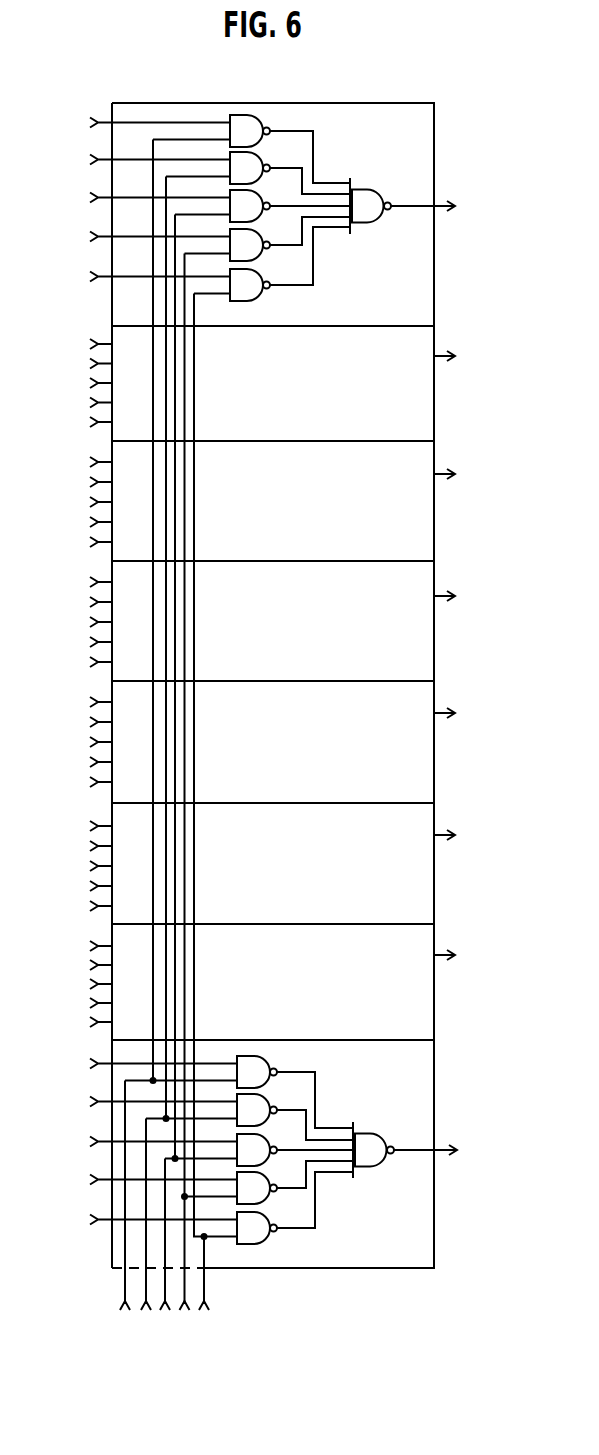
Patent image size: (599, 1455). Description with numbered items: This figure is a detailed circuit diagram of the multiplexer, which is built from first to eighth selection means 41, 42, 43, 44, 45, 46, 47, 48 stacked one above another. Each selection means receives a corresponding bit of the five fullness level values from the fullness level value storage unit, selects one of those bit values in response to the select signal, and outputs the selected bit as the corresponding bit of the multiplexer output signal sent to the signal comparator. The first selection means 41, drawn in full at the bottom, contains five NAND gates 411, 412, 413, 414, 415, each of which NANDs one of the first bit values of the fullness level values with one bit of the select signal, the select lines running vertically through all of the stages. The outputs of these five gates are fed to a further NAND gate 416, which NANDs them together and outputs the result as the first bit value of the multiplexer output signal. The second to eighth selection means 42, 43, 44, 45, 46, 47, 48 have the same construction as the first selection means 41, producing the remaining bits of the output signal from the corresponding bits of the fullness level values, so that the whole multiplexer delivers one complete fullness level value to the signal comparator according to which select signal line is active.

The first selection means 41 is at (275, 752).
The second selection means 42 is at (428, 1010).
The third selection means 43 is at (428, 897).
The fourth selection means 44 is at (428, 782).
The fifth selection means 45 is at (428, 663).
The sixth selection means 46 is at (428, 543).
The seventh selection means 47 is at (428, 415).
The eighth selection means 48 is at (428, 287).
The NAND gate 411 is at (256, 1236).
The NAND gate 412 is at (256, 1196).
The NAND gate 413 is at (256, 1158).
The NAND gate 414 is at (256, 1104).
The NAND gate 415 is at (256, 1070).
The NAND gate 416 is at (373, 1163).